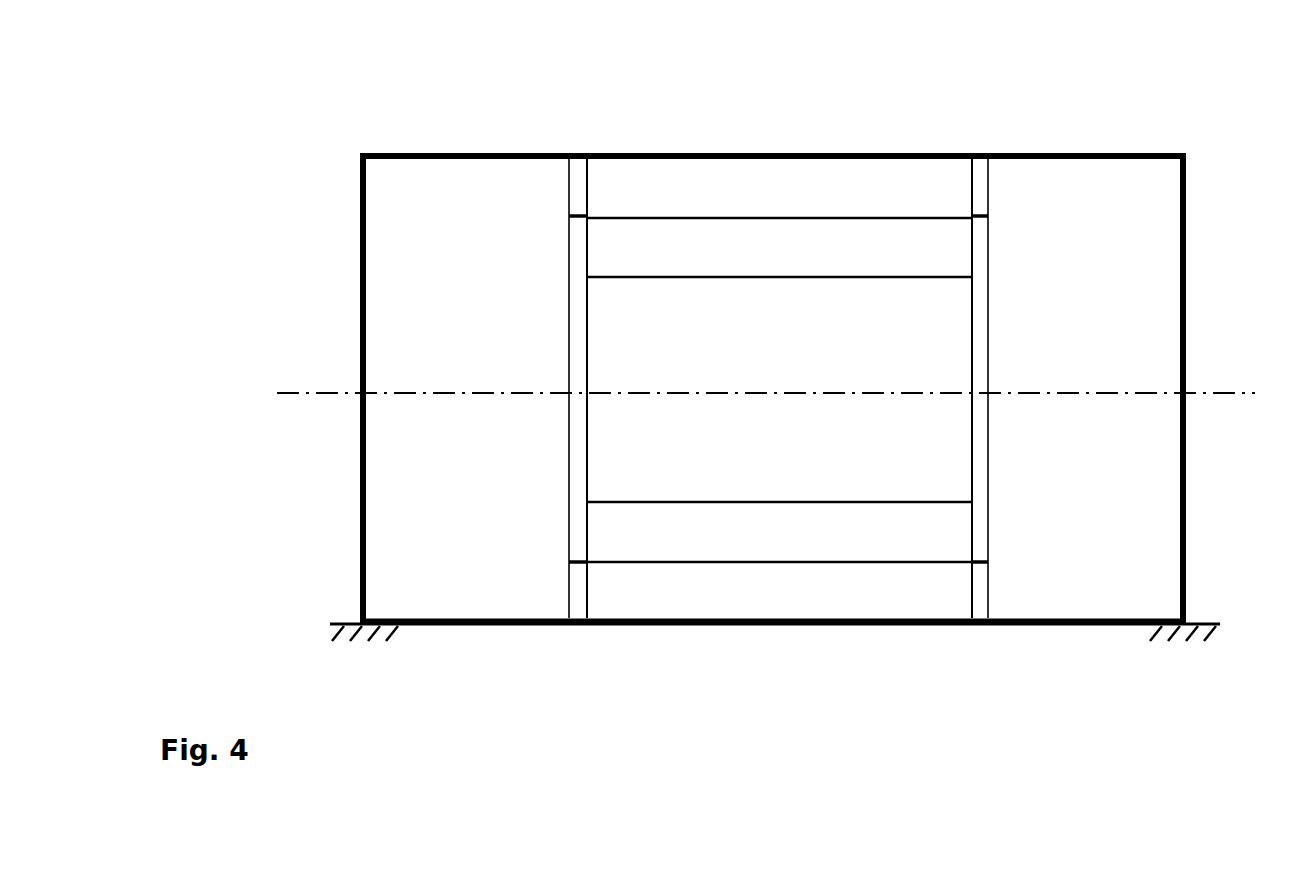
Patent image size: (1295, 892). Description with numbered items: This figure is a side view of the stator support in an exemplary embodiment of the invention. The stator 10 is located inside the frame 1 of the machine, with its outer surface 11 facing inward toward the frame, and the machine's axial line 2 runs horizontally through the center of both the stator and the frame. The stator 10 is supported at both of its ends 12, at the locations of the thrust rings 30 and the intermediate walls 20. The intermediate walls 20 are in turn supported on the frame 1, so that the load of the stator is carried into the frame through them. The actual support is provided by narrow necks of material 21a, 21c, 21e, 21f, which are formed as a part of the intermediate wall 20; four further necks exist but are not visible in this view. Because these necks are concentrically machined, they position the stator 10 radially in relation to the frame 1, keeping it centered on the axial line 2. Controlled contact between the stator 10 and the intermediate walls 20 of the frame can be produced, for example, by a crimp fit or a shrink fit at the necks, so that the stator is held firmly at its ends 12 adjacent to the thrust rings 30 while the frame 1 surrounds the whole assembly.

The frame 1 is at (908, 155).
The axial line 2 is at (412, 392).
The stator 10 is at (797, 553).
The outer surface of stator 11 is at (625, 218).
The end of stator 12 is at (587, 257).
The intermediate wall 20 is at (982, 172).
The neck 21a is at (575, 212).
The neck 21c is at (580, 570).
The neck 21e is at (978, 212).
The neck 21f is at (980, 575).
The thrust ring 30 is at (578, 447).